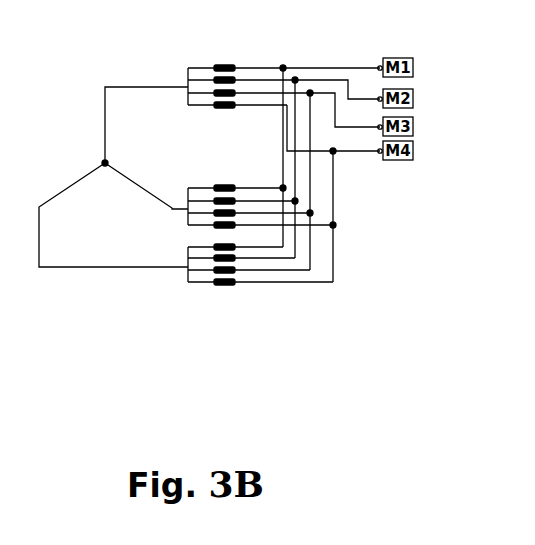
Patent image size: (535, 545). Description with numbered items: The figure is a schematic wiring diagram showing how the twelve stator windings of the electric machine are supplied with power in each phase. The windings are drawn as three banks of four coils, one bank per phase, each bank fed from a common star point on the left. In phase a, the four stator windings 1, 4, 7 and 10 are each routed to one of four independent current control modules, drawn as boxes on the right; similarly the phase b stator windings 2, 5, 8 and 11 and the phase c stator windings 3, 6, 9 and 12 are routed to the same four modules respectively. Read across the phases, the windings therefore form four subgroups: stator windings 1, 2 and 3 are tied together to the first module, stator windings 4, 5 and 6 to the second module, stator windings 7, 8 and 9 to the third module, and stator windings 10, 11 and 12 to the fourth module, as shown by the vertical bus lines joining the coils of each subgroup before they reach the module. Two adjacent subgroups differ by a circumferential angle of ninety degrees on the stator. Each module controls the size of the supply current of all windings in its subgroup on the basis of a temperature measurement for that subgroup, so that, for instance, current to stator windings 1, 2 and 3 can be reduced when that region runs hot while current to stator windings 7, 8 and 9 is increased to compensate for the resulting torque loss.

The stator winding 1 is at (235, 66).
The stator winding 2 is at (235, 186).
The stator winding 3 is at (235, 245).
The stator winding 4 is at (241, 78).
The stator winding 5 is at (241, 199).
The stator winding 6 is at (241, 256).
The stator winding 7 is at (249, 91).
The stator winding 8 is at (249, 211).
The stator winding 9 is at (249, 268).
The stator winding 10 is at (237, 103).
The stator winding 11 is at (260, 223).
The stator winding 12 is at (260, 280).